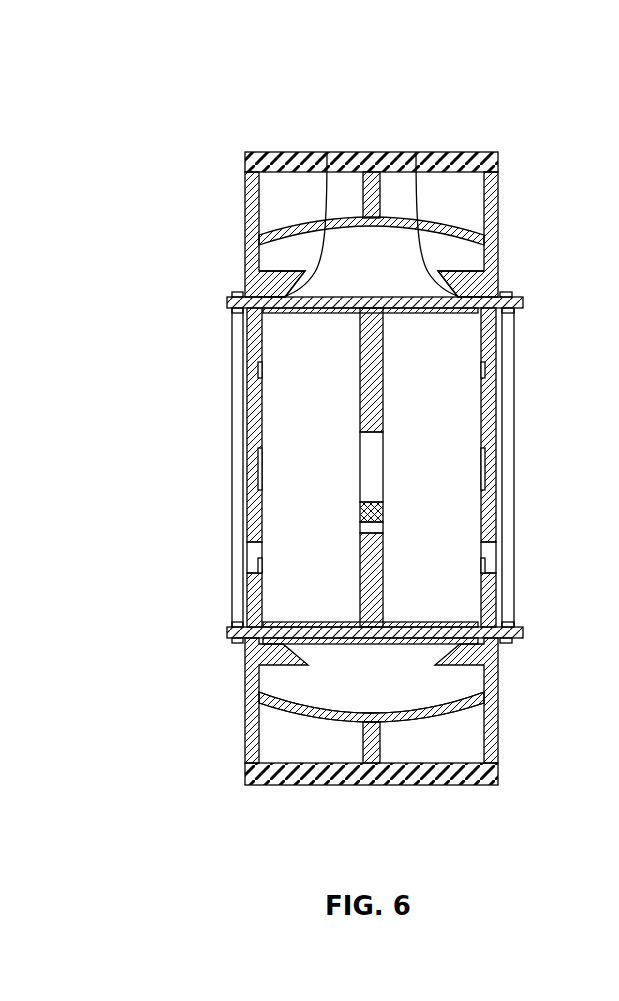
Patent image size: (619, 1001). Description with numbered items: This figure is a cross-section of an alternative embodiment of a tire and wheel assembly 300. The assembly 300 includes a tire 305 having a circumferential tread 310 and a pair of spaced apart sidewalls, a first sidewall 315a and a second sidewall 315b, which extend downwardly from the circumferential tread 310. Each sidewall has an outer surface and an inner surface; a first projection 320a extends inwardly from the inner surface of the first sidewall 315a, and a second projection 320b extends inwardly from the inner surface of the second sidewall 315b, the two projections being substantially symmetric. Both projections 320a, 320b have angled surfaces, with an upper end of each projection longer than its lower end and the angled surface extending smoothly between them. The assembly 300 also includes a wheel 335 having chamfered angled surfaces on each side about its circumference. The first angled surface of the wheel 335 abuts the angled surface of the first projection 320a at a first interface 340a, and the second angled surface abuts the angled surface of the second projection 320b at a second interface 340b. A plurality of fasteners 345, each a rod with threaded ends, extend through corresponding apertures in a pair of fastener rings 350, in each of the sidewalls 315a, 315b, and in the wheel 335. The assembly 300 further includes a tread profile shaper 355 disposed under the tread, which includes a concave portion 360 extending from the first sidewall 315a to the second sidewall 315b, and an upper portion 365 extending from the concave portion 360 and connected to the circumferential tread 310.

The tire and wheel assembly 300 is at (347, 434).
The tire 305 is at (233, 241).
The circumferential tread 310 is at (478, 151).
The first sidewall 315a is at (252, 705).
The second sidewall 315b is at (490, 198).
The first projection 320a is at (267, 288).
The second projection 320b is at (477, 289).
The wheel 335 is at (372, 512).
The first interface 340a is at (327, 152).
The second interface 340b is at (416, 152).
The fastener 345 is at (518, 627).
The fastener ring 350 is at (232, 552).
The tread profile shaper 355 is at (313, 735).
The concave portion 360 is at (437, 710).
The upper portion 365 is at (372, 757).